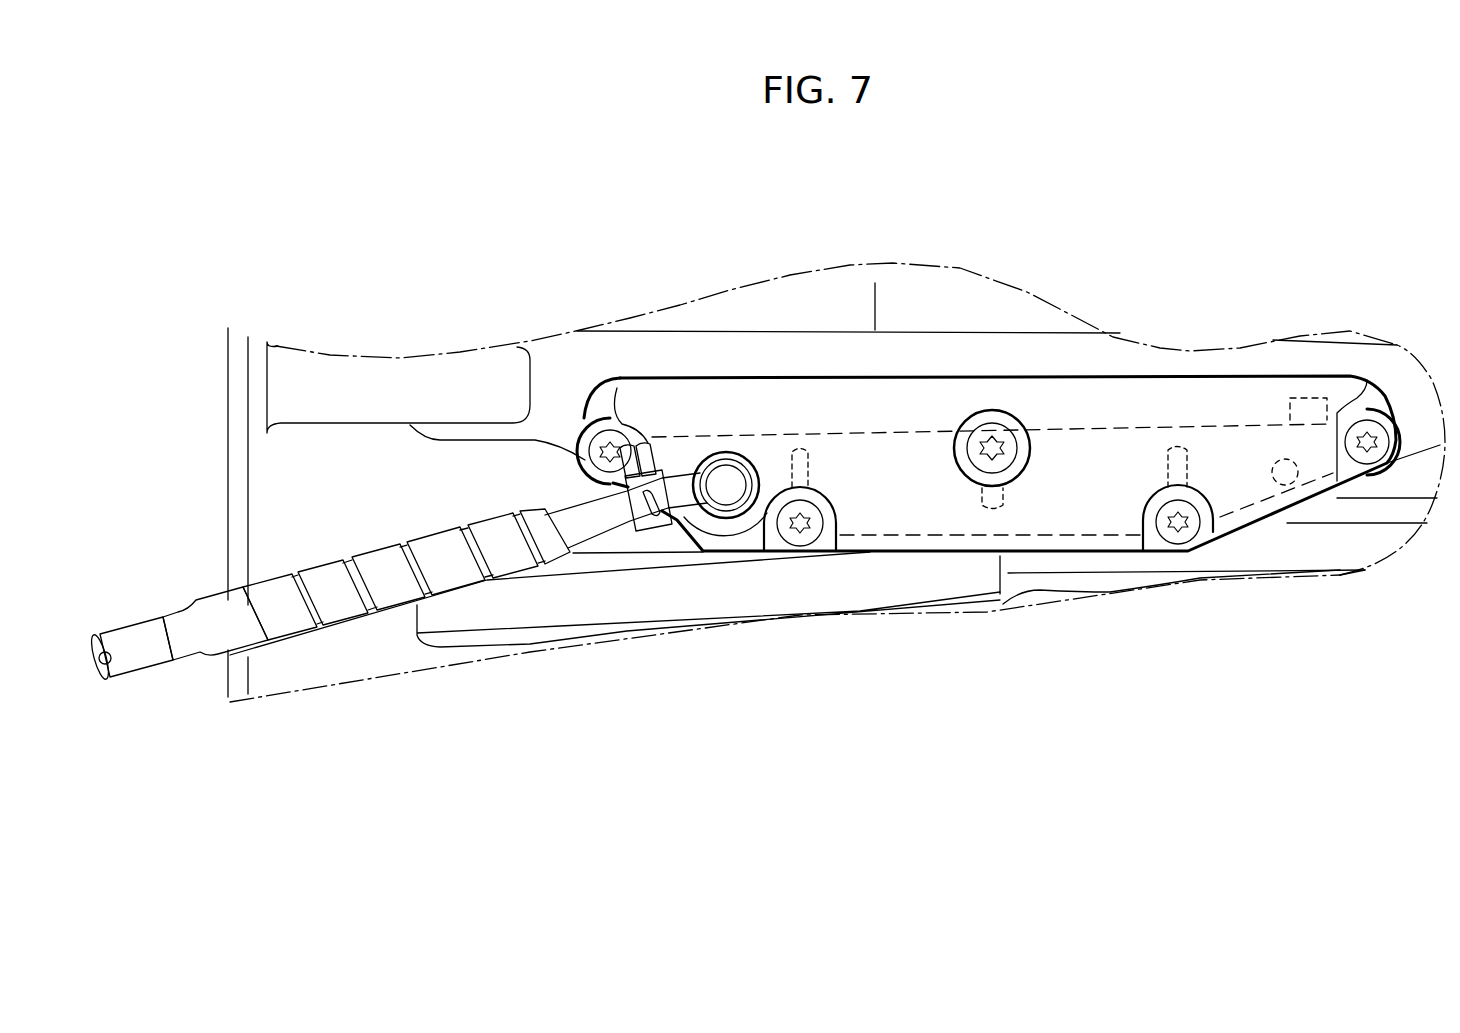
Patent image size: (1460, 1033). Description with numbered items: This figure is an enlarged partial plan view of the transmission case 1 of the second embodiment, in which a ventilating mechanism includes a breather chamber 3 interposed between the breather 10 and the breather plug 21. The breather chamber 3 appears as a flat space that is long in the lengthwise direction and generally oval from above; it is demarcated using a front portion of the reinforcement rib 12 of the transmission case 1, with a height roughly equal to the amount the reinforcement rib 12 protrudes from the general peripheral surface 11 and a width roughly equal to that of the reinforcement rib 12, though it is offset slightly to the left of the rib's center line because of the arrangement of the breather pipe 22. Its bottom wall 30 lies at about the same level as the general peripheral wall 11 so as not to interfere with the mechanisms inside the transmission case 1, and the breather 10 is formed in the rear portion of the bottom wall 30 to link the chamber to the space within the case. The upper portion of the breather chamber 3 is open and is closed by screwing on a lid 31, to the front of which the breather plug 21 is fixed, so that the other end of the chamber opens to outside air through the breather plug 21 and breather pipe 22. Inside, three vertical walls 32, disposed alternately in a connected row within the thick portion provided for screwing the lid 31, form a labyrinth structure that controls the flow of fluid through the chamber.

The transmission case 1 is at (232, 470).
The breather chamber 3 is at (921, 377).
The breather 10 is at (1300, 396).
The general peripheral surface 11 is at (1380, 490).
The reinforcement rib 12 is at (645, 347).
The breather plug 21 is at (737, 535).
The breather pipe 22 is at (425, 548).
The bottom wall 30 is at (1090, 527).
The lid 31 is at (1150, 397).
The vertical walls 32 is at (815, 460).